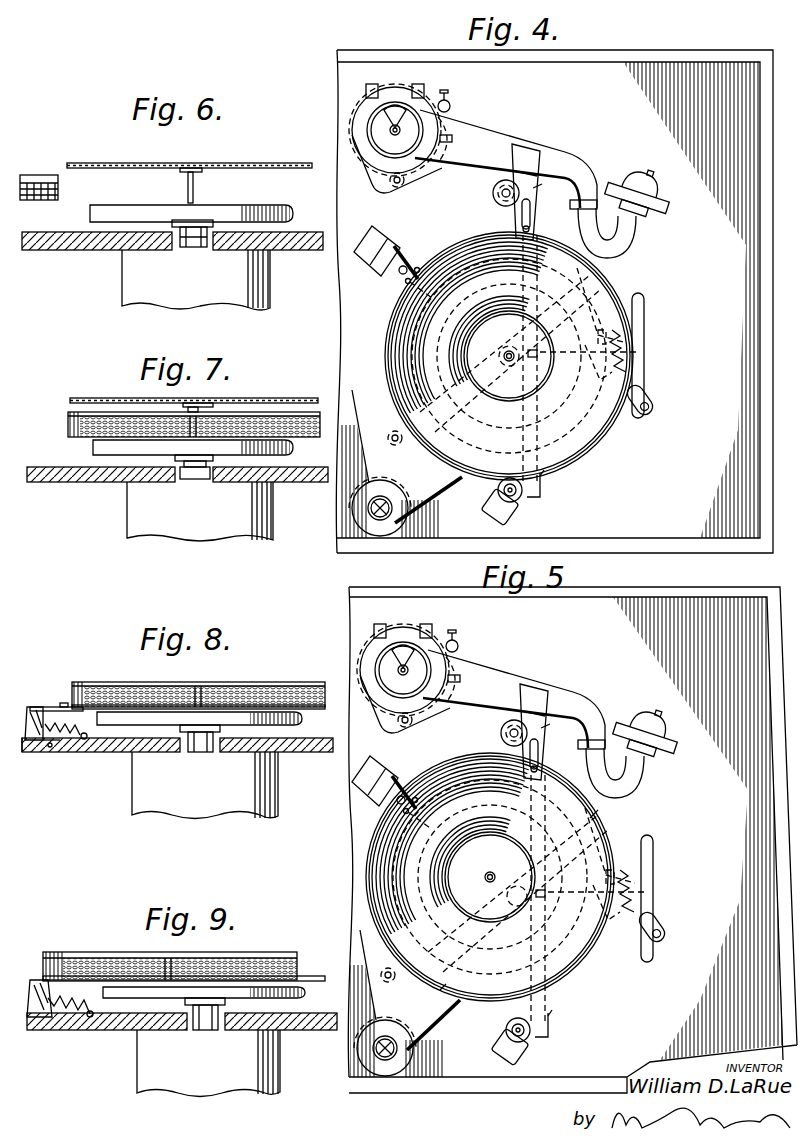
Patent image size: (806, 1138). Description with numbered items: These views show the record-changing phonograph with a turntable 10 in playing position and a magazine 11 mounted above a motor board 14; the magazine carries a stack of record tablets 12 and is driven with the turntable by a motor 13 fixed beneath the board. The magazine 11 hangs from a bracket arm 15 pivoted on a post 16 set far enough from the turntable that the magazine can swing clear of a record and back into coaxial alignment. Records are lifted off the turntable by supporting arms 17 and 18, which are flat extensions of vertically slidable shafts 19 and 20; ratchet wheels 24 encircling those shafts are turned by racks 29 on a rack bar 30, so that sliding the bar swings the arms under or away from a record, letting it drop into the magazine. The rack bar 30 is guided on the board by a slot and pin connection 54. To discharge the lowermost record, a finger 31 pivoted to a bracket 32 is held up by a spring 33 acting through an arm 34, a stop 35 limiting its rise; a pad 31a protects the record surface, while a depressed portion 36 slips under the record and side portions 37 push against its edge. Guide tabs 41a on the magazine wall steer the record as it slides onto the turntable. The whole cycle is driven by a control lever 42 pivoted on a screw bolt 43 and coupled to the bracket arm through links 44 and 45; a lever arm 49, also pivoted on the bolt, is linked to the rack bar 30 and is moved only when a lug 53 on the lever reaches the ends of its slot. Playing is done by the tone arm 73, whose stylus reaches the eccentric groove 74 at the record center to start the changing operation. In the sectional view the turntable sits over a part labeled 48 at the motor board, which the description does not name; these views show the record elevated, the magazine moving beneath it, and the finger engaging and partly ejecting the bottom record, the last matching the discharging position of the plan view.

In FIG. 4, the turntable 10 is at (603, 428).
In FIG. 5, the turntable 10 is at (604, 824).
In FIG. 6, the turntable 10 is at (116, 206).
In FIG. 7, the turntable 10 is at (93, 447).
In FIG. 8, the turntable 10 is at (302, 718).
In FIG. 9, the turntable 10 is at (305, 993).
In FIG. 5, the magazine 11 is at (378, 829).
In FIG. 6, the magazine 11 is at (37, 175).
In FIG. 7, the magazine 11 is at (68, 419).
In FIG. 8, the magazine 11 is at (303, 682).
In FIG. 9, the magazine 11 is at (280, 958).
In FIG. 4, the record tablet 12 is at (584, 440).
In FIG. 5, the record tablet 12 is at (466, 992).
In FIG. 6, the record tablet 12 is at (111, 163).
In FIG. 7, the record tablet 12 is at (86, 398).
In FIG. 8, the record tablet 12 is at (107, 690).
In FIG. 9, the record tablet 12 is at (99, 966).
In FIG. 6, the motor 13 is at (270, 280).
In FIG. 7, the motor 13 is at (273, 518).
In FIG. 8, the motor 13 is at (278, 793).
In FIG. 9, the motor 13 is at (281, 1061).
In FIG. 4, the motor board 14 is at (337, 101).
In FIG. 5, the motor board 14 is at (349, 858).
In FIG. 6, the motor board 14 is at (65, 251).
In FIG. 7, the motor board 14 is at (86, 482).
In FIG. 8, the motor board 14 is at (115, 752).
In FIG. 9, the motor board 14 is at (108, 1031).
In FIG. 4, the bracket arm 15 is at (433, 490).
In FIG. 5, the bracket arm 15 is at (378, 990).
In FIG. 4, the post 16 is at (405, 523).
In FIG. 5, the post 16 is at (410, 1053).
In FIG. 4, the supporting arm 17 is at (513, 172).
In FIG. 5, the supporting arm 17 is at (541, 690).
In FIG. 4, the supporting arm 18 is at (514, 508).
In FIG. 5, the supporting arm 18 is at (524, 1042).
In FIG. 4, the shaft 19 is at (498, 201).
In FIG. 5, the shaft 19 is at (501, 737).
In FIG. 4, the shaft 20 is at (540, 496).
In FIG. 5, the shaft 20 is at (549, 1034).
In FIG. 4, the ratchet wheel 24 is at (493, 193).
In FIG. 5, the ratchet wheel 24 is at (503, 728).
In FIG. 4, the rack 29 is at (533, 191).
In FIG. 5, the rack 29 is at (541, 733).
In FIG. 4, the rack bar 30 is at (522, 285).
In FIG. 5, the rack bar 30 is at (536, 875).
In FIG. 4, the finger 31 is at (396, 262).
In FIG. 5, the finger 31 is at (396, 786).
In FIG. 8, the finger 31 is at (53, 707).
In FIG. 4, the pad 31a is at (404, 265).
In FIG. 8, the pad 31a is at (63, 702).
In FIG. 4, the bracket 32 is at (377, 234).
In FIG. 5, the bracket 32 is at (379, 766).
In FIG. 8, the bracket 32 is at (28, 707).
In FIG. 8, the spring 33 is at (63, 742).
In FIG. 8, the arm 34 is at (30, 752).
In FIG. 8, the stop 35 is at (50, 752).
In FIG. 4, the depressed portion 36 is at (447, 291).
In FIG. 5, the depressed portion 36 is at (430, 819).
In FIG. 8, the depressed portion 36 is at (62, 735).
In FIG. 4, the side portions 37 is at (418, 267).
In FIG. 4, the guide tab 41a is at (610, 301).
In FIG. 5, the guide tab 41a is at (598, 810).
In FIG. 4, the control lever 42 is at (649, 396).
In FIG. 5, the control lever 42 is at (663, 922).
In FIG. 4, the screw bolt 43 is at (600, 368).
In FIG. 5, the screw bolt 43 is at (600, 905).
In FIG. 4, the link 44 is at (432, 402).
In FIG. 5, the link 44 is at (440, 930).
In FIG. 4, the link 45 is at (540, 318).
In FIG. 5, the link 45 is at (541, 848).
In FIG. 6, the bearing 48 is at (190, 240).
In FIG. 4, the lever arm 49 is at (541, 360).
In FIG. 5, the lever arm 49 is at (532, 900).
In FIG. 5, the lug 53 is at (648, 905).
In FIG. 4, the slot and pin connection 54 is at (530, 222).
In FIG. 4, the tone arm 73 is at (496, 140).
In FIG. 5, the tone arm 73 is at (495, 677).
In FIG. 4, the eccentric groove 74 is at (493, 400).
In FIG. 5, the eccentric groove 74 is at (446, 882).